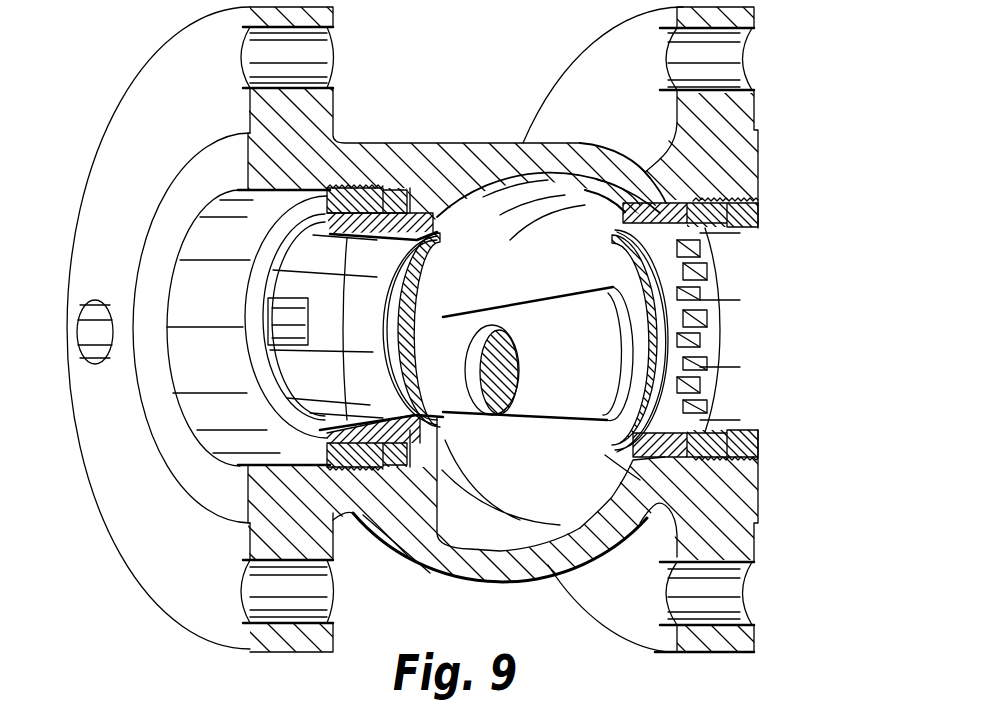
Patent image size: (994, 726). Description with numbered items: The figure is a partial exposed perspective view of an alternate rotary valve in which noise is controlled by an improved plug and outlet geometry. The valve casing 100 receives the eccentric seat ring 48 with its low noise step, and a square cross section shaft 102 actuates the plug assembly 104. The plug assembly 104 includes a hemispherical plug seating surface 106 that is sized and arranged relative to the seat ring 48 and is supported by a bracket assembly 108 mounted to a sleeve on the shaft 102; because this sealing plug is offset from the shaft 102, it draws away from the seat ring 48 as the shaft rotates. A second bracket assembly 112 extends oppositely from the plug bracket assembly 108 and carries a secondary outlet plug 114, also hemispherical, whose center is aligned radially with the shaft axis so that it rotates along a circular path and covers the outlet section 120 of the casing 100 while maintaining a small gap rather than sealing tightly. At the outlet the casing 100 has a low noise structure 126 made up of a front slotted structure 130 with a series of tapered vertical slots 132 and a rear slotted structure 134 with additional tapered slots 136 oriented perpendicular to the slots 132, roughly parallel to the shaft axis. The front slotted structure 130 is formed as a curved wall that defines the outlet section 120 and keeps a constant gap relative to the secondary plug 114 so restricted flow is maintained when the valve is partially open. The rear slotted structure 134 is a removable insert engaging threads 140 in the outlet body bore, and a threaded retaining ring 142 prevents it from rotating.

The eccentric seat ring 48 is at (397, 197).
The valve casing 100 is at (439, 126).
The shaft 102 is at (510, 357).
The plug assembly 104 is at (483, 280).
The hemispherical plug seating surface 106 is at (402, 348).
The bracket assembly 108 is at (448, 275).
The second bracket assembly 112 is at (537, 407).
The secondary outlet plug 114 is at (663, 330).
The outlet section 120 is at (620, 451).
The low noise structure 126 is at (680, 193).
The front slotted structure 130 is at (597, 247).
The vertical slots 132 is at (592, 248).
The rear slotted structure 134 is at (717, 390).
The tapered slots 136 is at (720, 260).
The threads 140 is at (710, 197).
The retaining ring 142 is at (753, 210).